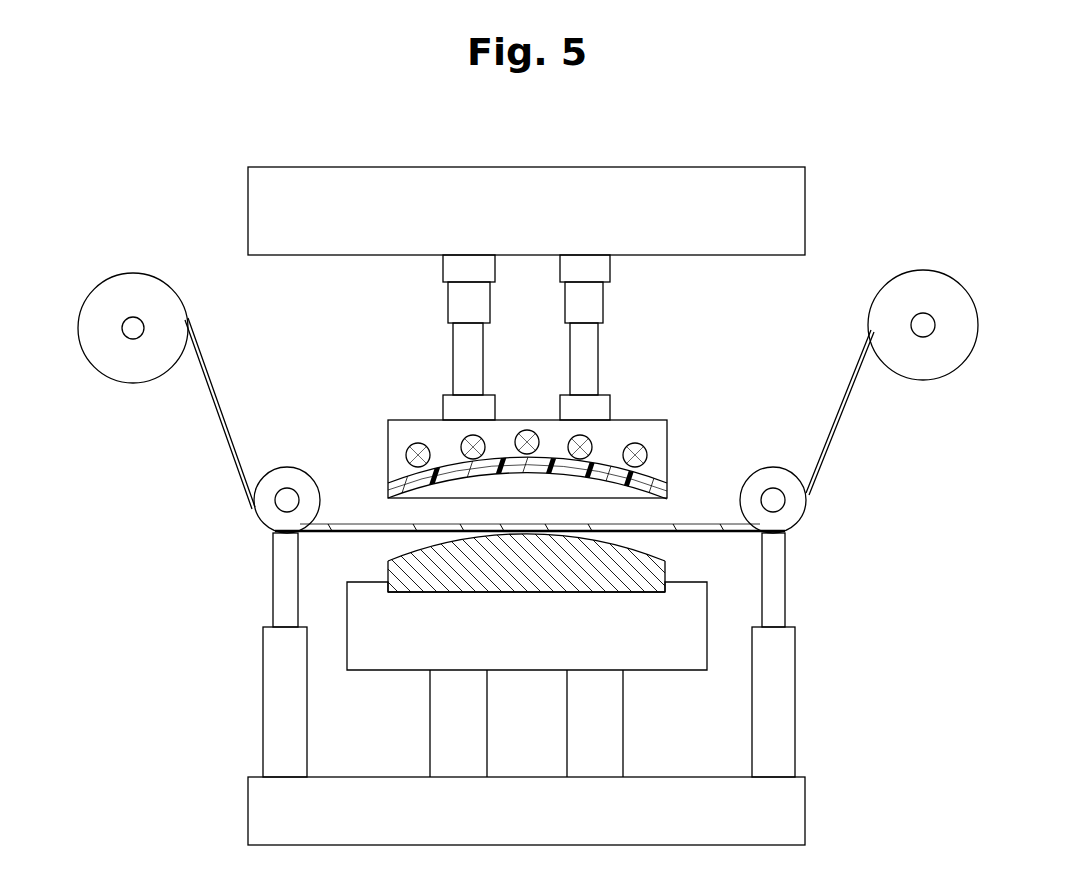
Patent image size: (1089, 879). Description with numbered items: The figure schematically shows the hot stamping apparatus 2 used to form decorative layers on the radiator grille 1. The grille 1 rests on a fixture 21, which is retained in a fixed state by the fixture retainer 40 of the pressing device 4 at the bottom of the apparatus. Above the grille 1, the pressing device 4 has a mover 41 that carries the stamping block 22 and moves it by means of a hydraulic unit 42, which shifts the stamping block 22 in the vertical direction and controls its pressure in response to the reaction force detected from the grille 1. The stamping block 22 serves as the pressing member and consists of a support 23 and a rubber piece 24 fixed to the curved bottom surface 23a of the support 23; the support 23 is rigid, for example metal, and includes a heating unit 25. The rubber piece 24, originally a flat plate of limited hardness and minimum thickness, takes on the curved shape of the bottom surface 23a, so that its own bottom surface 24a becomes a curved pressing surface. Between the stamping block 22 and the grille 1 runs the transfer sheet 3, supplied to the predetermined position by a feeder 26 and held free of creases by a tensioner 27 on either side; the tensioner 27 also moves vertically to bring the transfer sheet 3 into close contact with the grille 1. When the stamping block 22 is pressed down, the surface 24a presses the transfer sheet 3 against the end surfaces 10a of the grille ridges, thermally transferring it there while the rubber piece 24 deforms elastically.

The radiator grille 1 is at (522, 538).
The hot stamping apparatus 2 is at (242, 128).
The transfer sheet 3 is at (233, 458).
The pressing device 4 is at (328, 232).
The end surface of ridge 10a is at (462, 545).
The fixture 21 is at (680, 640).
The stamping block 22 is at (905, 395).
The support 23 is at (652, 435).
The curved bottom surface of support 23a is at (573, 440).
The rubber piece 24 is at (645, 483).
The bottom surface of rubber piece 24a is at (452, 477).
The heating unit 25 is at (417, 450).
The feeder 26 is at (170, 357).
The tensioner 27 is at (272, 518).
The fixture retainer 40 is at (278, 803).
The mover 41 is at (328, 232).
The hydraulic unit 42 is at (465, 358).